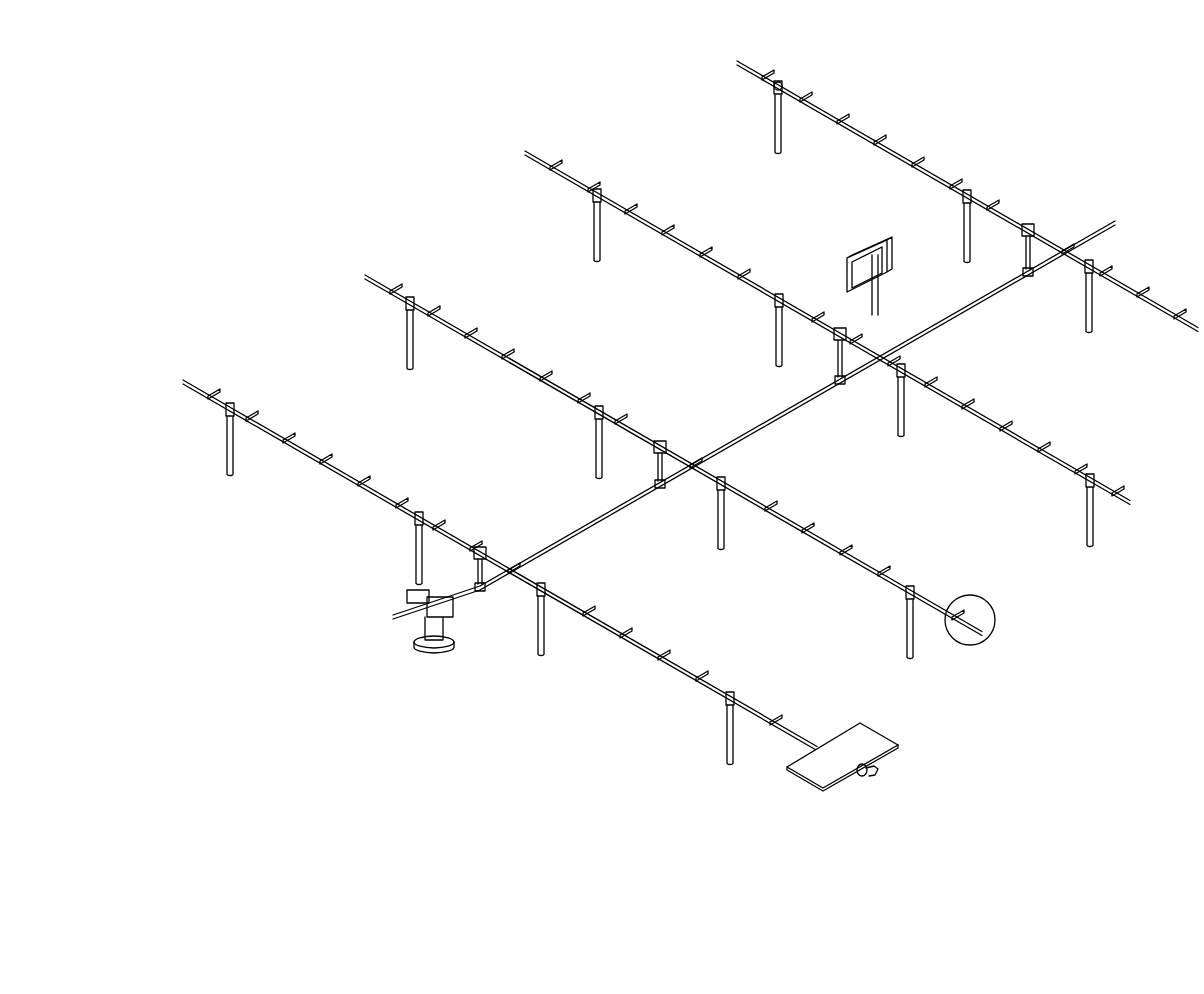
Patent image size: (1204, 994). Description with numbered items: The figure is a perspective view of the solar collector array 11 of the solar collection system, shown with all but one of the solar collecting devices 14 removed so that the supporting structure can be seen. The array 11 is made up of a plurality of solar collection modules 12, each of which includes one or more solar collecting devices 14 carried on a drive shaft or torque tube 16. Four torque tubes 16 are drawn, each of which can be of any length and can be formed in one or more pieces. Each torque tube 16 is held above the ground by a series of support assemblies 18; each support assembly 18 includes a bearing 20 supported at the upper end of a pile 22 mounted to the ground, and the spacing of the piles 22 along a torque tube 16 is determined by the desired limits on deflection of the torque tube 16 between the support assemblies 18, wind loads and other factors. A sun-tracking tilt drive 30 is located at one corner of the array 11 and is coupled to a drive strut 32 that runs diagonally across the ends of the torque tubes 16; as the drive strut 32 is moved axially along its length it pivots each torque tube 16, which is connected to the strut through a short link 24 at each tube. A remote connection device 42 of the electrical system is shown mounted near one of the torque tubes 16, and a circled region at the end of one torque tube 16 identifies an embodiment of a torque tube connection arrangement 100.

The solar collector array 11 is at (283, 128).
The solar collection module 12 is at (586, 630).
The solar collecting device 14 is at (875, 745).
The torque tube 16 is at (858, 127).
The support assembly 18 is at (772, 114).
The bearing 20 is at (795, 83).
The pile 22 is at (790, 142).
The actuator 24 is at (650, 467).
The tilt drive 30 is at (433, 655).
The drive strut 32 is at (598, 530).
The remote connection device 42 is at (865, 240).
The torque tube connection arrangement 100 is at (993, 618).